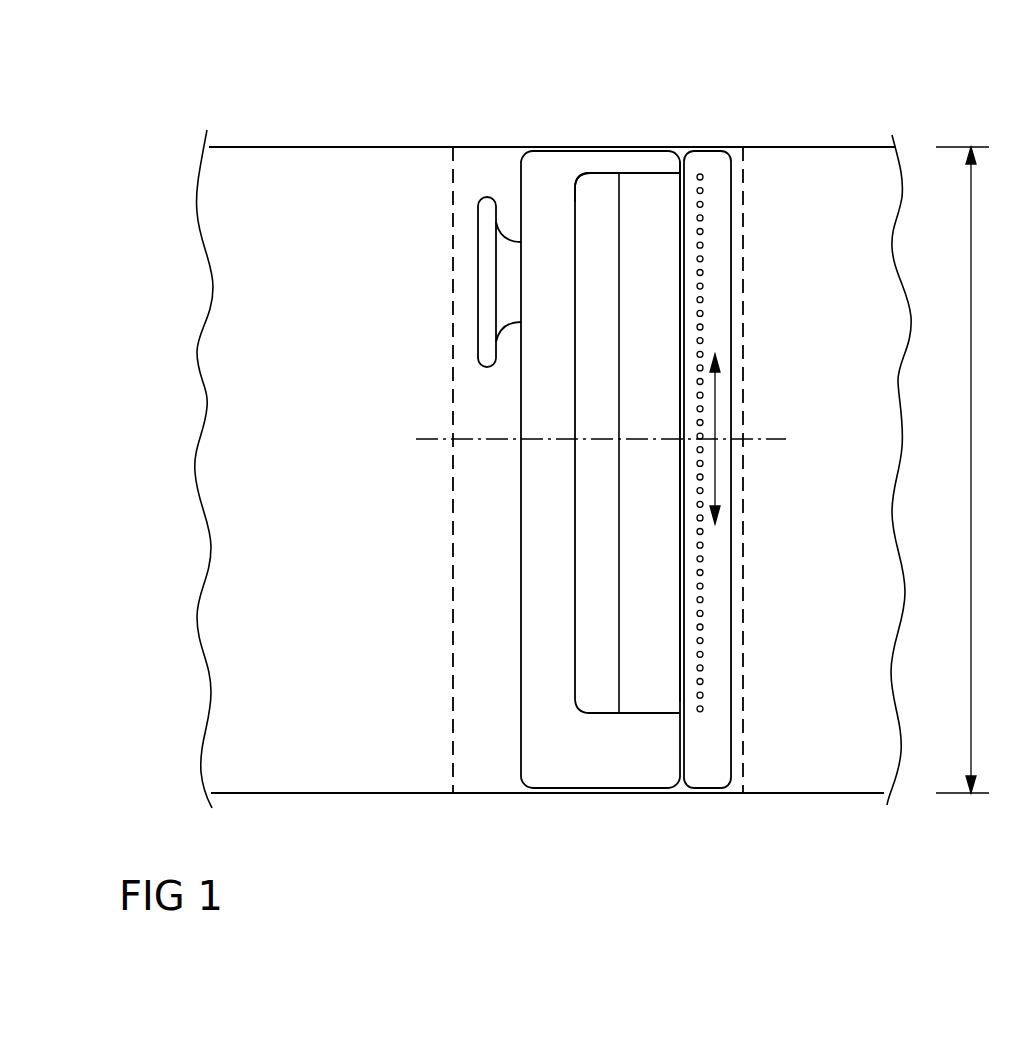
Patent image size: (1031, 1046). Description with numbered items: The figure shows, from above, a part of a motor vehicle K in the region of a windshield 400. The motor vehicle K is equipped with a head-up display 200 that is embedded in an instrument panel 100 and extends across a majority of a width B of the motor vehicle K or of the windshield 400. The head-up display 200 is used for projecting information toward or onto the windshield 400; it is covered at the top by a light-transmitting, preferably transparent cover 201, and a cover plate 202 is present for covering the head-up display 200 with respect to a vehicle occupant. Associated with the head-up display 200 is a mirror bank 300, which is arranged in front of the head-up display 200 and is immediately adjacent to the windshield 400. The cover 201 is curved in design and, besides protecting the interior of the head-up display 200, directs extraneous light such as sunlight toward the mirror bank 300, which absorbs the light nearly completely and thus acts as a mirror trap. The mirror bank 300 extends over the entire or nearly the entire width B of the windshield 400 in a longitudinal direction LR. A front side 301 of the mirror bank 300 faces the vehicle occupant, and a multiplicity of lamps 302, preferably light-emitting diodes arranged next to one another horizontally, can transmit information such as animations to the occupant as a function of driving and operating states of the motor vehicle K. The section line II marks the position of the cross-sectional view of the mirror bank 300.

The instrument panel 100 is at (520, 660).
The head-up display 200 is at (580, 163).
The cover 201 is at (650, 192).
The cover plate 202 is at (597, 192).
The mirror bank 300 is at (710, 151).
The front side 301 is at (682, 192).
The lamps 302 is at (702, 339).
The windshield 400 is at (454, 755).
The motor vehicle K is at (689, 85).
The width B is at (972, 392).
The longitudinal direction LR is at (714, 460).
The section line II is at (425, 422).